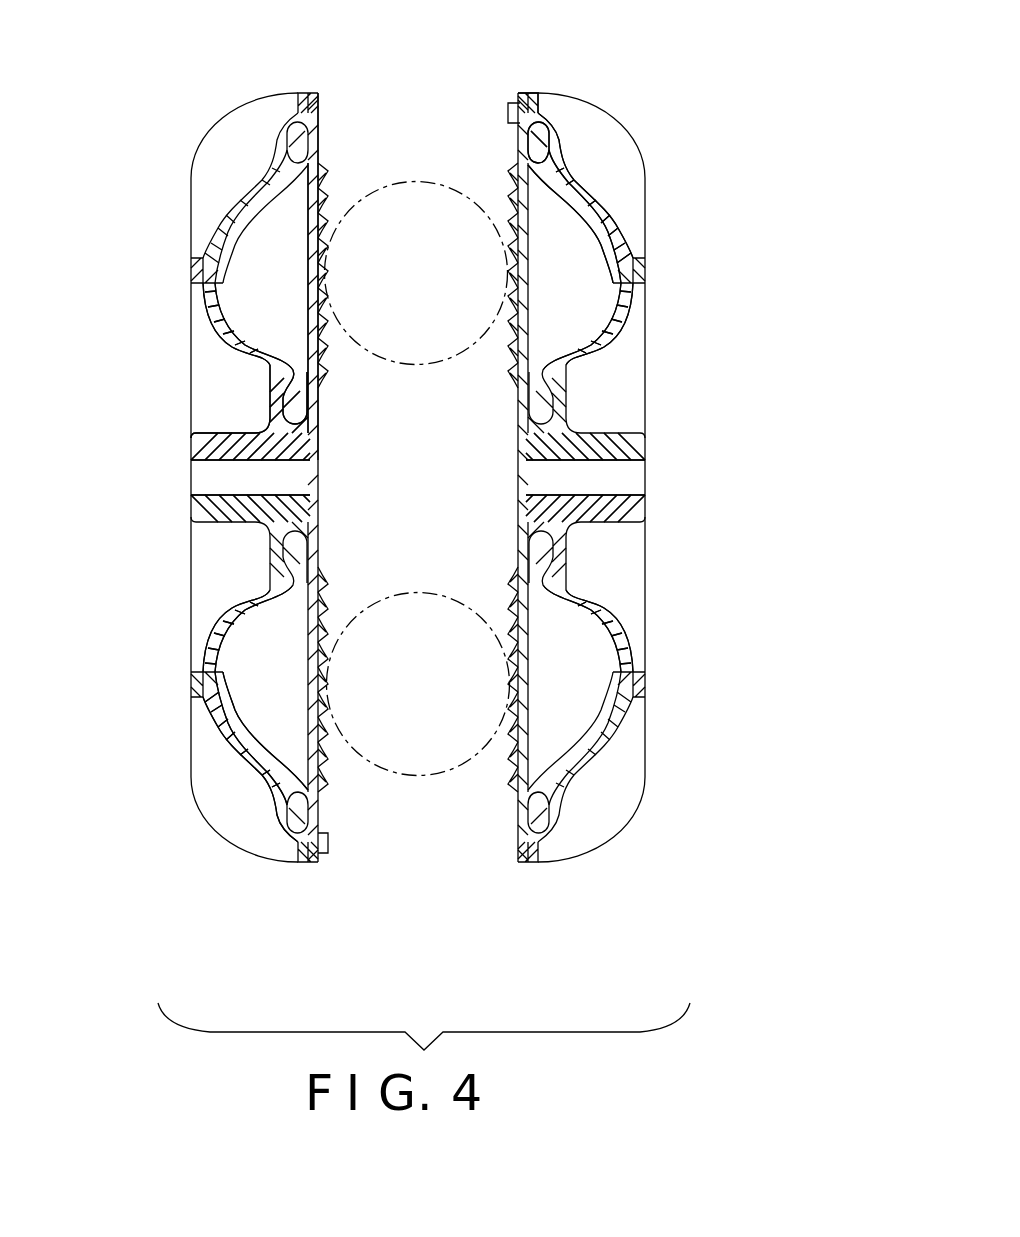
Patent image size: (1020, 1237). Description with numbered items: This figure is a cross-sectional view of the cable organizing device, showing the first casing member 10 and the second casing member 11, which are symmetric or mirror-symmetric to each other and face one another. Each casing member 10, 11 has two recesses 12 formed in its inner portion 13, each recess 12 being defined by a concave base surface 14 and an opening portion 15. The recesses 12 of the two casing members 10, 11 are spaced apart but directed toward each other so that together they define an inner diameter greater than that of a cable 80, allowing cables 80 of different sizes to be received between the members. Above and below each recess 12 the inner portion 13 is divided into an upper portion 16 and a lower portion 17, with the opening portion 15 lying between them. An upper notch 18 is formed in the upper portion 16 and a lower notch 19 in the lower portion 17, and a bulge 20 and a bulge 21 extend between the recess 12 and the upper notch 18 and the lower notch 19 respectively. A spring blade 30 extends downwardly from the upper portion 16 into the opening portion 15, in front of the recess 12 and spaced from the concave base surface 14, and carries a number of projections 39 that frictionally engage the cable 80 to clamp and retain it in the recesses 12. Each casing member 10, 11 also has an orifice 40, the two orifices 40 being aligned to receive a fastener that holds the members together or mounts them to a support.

The first casing member 10 is at (240, 808).
The second casing member 11 is at (590, 834).
The recess 12 is at (583, 638).
The inner portion 13 is at (515, 97).
The concave base surface 14 is at (222, 731).
The opening portion 15 is at (293, 630).
The upper portion 16 is at (528, 82).
The lower portion 17 is at (290, 435).
The upper notch 18 is at (535, 143).
The lower notch 19 is at (305, 408).
The bulge 20 is at (543, 177).
The bulge 21 is at (290, 385).
The spring blade 30 is at (310, 305).
The projections 39 is at (333, 240).
The orifice 40 is at (217, 488).
The cable 80 is at (423, 337).